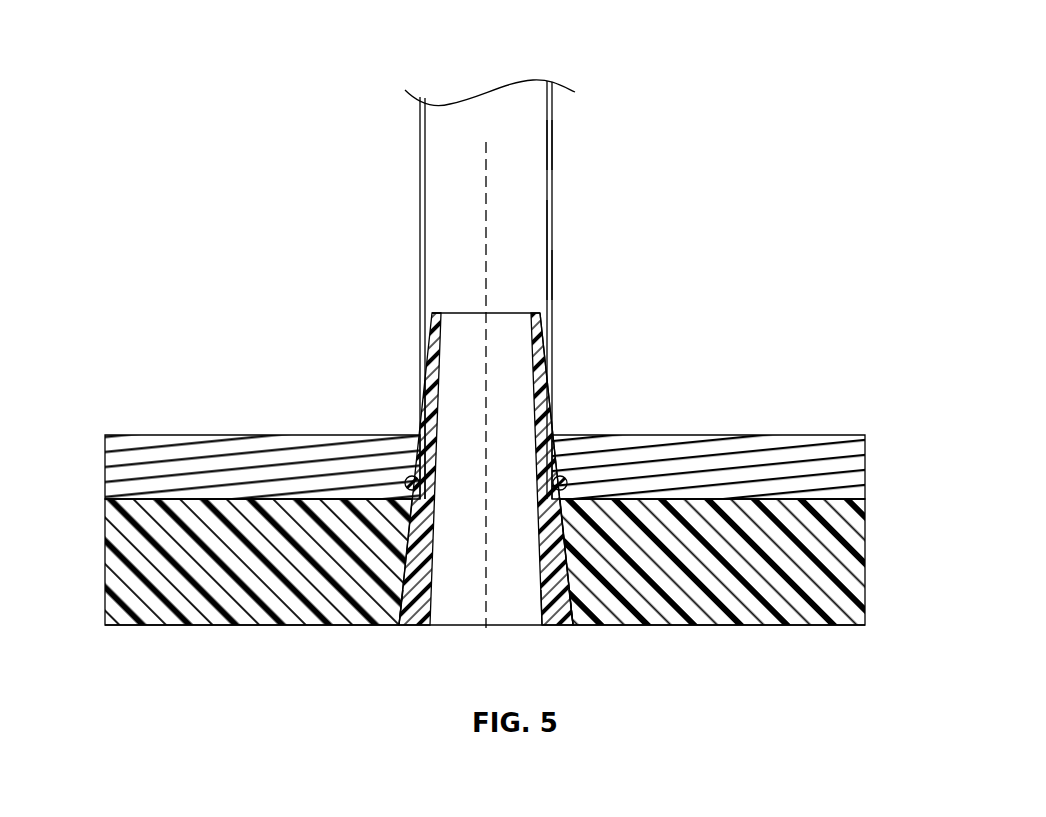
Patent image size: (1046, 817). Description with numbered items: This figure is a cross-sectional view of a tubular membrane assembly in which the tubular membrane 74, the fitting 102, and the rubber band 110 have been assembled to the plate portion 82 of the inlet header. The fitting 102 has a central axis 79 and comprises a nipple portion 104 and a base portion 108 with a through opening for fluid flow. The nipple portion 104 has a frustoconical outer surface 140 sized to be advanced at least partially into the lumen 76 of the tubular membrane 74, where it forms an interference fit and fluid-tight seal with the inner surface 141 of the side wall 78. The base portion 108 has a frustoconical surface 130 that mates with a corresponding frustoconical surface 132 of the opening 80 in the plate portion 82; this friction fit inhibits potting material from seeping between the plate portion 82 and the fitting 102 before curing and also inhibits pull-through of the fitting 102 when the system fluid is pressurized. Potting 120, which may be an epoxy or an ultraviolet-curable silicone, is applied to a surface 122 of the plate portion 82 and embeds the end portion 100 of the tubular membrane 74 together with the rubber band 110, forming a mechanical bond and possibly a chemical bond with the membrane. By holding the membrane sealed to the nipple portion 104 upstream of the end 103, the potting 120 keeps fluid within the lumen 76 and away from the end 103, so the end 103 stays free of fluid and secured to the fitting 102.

The tubular membrane 74 is at (552, 267).
The lumen 76 is at (517, 118).
The side wall 78 is at (552, 141).
The central axis 79 is at (485, 154).
The opening 80 is at (573, 598).
The plate portion 82 is at (865, 565).
The end portion 100 is at (422, 457).
The fitting 102 is at (562, 606).
The end 103 is at (420, 500).
The nipple portion 104 is at (435, 313).
The base portion 108 is at (418, 590).
The rubber band 110 is at (562, 477).
The potting 120 is at (263, 435).
The surface 122 is at (815, 499).
The frustoconical surface 130 is at (400, 597).
The frustoconical surface 132 is at (398, 588).
The frustoconical outer surface 140 is at (542, 347).
The inner surface 141 is at (547, 233).